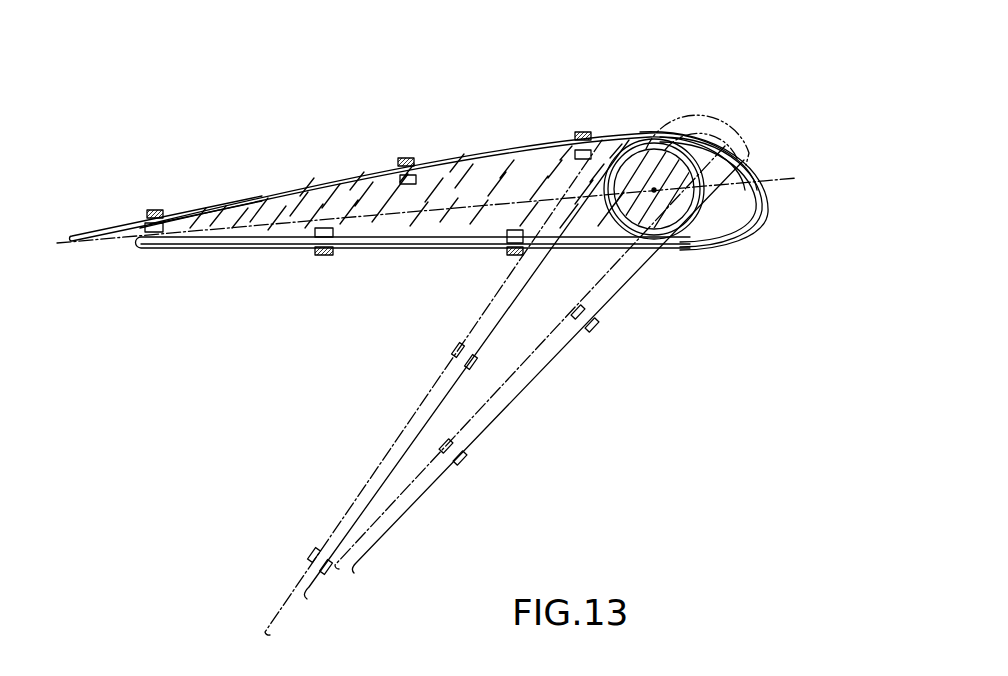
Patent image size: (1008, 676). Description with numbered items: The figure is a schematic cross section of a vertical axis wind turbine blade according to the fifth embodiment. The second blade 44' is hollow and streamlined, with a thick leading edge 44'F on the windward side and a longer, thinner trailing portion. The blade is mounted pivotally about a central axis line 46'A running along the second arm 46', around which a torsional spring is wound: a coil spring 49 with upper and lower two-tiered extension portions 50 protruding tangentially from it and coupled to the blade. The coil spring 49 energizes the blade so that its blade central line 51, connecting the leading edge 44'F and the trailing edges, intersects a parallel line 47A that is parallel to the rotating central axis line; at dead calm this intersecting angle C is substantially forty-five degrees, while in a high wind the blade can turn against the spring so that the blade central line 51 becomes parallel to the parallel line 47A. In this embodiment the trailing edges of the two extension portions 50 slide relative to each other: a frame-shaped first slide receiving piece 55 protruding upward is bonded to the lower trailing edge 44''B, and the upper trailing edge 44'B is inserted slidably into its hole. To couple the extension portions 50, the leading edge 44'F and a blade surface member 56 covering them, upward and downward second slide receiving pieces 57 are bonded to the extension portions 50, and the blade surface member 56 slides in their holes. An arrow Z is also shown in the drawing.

The upper trailing edge 44'B is at (147, 190).
The first slide receiving piece 55 is at (154, 208).
The second blade 44' is at (442, 174).
The blade surface member 56 is at (362, 178).
The second slide receiving piece 57 is at (403, 157).
The lower trailing edge 44''B is at (413, 279).
The blade central line 51 is at (323, 258).
The extension portions 50 is at (497, 232).
The coil spring 49 is at (607, 216).
The second arm 46' is at (700, 190).
The central axis line 46'A is at (738, 138).
The leading edge 44'F is at (746, 191).
The parallel line 47A is at (860, 425).
The axis direction Z is at (520, 82).
The intersecting angle C is at (283, 572).